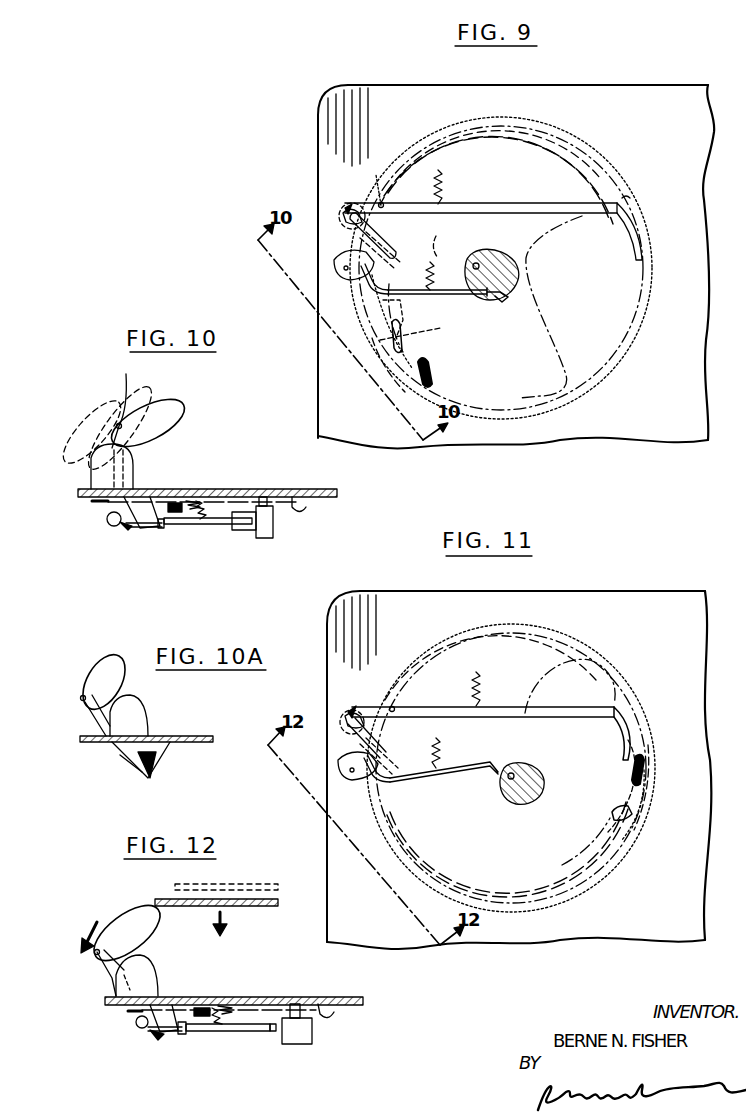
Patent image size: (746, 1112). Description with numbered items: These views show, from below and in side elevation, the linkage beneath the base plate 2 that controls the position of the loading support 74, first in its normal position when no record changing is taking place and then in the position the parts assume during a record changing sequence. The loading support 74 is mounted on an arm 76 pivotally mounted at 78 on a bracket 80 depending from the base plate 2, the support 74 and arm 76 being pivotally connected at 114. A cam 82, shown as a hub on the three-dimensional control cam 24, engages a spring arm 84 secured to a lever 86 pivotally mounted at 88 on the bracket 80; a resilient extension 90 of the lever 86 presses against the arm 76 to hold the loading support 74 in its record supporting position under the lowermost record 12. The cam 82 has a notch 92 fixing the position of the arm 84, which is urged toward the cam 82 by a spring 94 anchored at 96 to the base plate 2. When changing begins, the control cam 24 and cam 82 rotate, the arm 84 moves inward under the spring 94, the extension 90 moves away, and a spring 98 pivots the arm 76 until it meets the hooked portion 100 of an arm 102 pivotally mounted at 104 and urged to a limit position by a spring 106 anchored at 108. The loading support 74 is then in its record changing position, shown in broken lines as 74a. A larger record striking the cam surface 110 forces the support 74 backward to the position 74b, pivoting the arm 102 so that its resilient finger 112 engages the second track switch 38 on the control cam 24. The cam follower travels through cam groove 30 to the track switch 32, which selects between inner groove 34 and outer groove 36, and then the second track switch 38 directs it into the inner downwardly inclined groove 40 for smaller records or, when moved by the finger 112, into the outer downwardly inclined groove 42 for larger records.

In FIG. 9, the base plate 2 is at (668, 96).
In FIG. 10, the base plate 2 is at (292, 489).
In FIG. 10A, the base plate 2 is at (204, 736).
In FIG. 12, the base plate 2 is at (316, 1003).
In FIG. 11, the base plate 2 is at (650, 592).
In FIG. 12, the record 12 is at (238, 893).
In FIG. 9, the three-dimensional control cam 24 is at (620, 347).
In FIG. 11, the three-dimensional control cam 24 is at (548, 640).
In FIG. 9, the cam groove 30 is at (470, 412).
In FIG. 11, the cam groove 30 is at (626, 698).
In FIG. 9, the track switch 32 is at (430, 370).
In FIG. 11, the track switch 32 is at (642, 770).
In FIG. 9, the inner groove 34 is at (402, 362).
In FIG. 11, the inner groove 34 is at (640, 786).
In FIG. 9, the outer groove 36 is at (398, 362).
In FIG. 11, the outer groove 36 is at (648, 800).
In FIG. 9, the second track switch 38 is at (394, 336).
In FIG. 11, the second track switch 38 is at (628, 816).
In FIG. 9, the inner downwardly inclined groove 40 is at (406, 302).
In FIG. 11, the inner downwardly inclined groove 40 is at (598, 828).
In FIG. 9, the outer downwardly inclined groove 42 is at (374, 314).
In FIG. 11, the outer downwardly inclined groove 42 is at (626, 840).
In FIG. 10, the loading support 74 is at (168, 410).
In FIG. 10A, the loading support 74 is at (96, 670).
In FIG. 12, the loading support 74 is at (122, 922).
In FIG. 10, the loading support record changing position 74a is at (140, 404).
In FIG. 10, the loading support cammed-out position 74b is at (92, 408).
In FIG. 9, the arm 76 is at (366, 236).
In FIG. 10, the arm 76 is at (126, 446).
In FIG. 10A, the arm 76 is at (96, 718).
In FIG. 12, the arm 76 is at (112, 972).
In FIG. 11, the arm 76 is at (378, 742).
In FIG. 9, the pivot 78 is at (382, 250).
In FIG. 10, the pivot 78 is at (140, 530).
In FIG. 10A, the pivot 78 is at (158, 776).
In FIG. 12, the pivot 78 is at (162, 1036).
In FIG. 11, the pivot 78 is at (387, 756).
In FIG. 9, the bracket 80 is at (342, 260).
In FIG. 10, the bracket 80 is at (148, 500).
In FIG. 10A, the bracket 80 is at (160, 758).
In FIG. 12, the bracket 80 is at (170, 1005).
In FIG. 11, the bracket 80 is at (342, 762).
In FIG. 9, the cam 82 is at (492, 256).
In FIG. 10, the cam 82 is at (272, 532).
In FIG. 12, the cam 82 is at (304, 1045).
In FIG. 11, the cam 82 is at (538, 764).
In FIG. 9, the spring arm 84 is at (453, 297).
In FIG. 10, the spring arm 84 is at (205, 526).
In FIG. 12, the spring arm 84 is at (230, 1032).
In FIG. 11, the spring arm 84 is at (448, 772).
In FIG. 9, the lever 86 is at (358, 280).
In FIG. 10, the lever 86 is at (158, 530).
In FIG. 12, the lever 86 is at (182, 1036).
In FIG. 11, the lever 86 is at (364, 782).
In FIG. 9, the pivot 88 is at (342, 269).
In FIG. 10, the pivot 88 is at (124, 528).
In FIG. 12, the pivot 88 is at (154, 1040).
In FIG. 11, the pivot 88 is at (348, 771).
In FIG. 9, the extension 90 is at (345, 216).
In FIG. 10, the extension 90 is at (110, 524).
In FIG. 12, the extension 90 is at (140, 1030).
In FIG. 11, the extension 90 is at (346, 730).
In FIG. 9, the notch 92 is at (474, 284).
In FIG. 10, the notch 92 is at (244, 532).
In FIG. 11, the notch 92 is at (546, 772).
In FIG. 9, the spring 94 is at (427, 263).
In FIG. 10, the spring 94 is at (196, 512).
In FIG. 12, the spring 94 is at (212, 1024).
In FIG. 11, the spring 94 is at (442, 750).
In FIG. 9, the anchor 96 is at (507, 307).
In FIG. 10A, the spring 98 is at (136, 766).
In FIG. 9, the hooked portion 100 is at (347, 209).
In FIG. 10, the hooked portion 100 is at (96, 505).
In FIG. 12, the hooked portion 100 is at (126, 1012).
In FIG. 11, the hooked portion 100 is at (350, 710).
In FIG. 9, the arm 102 is at (497, 203).
In FIG. 10, the arm 102 is at (240, 500).
In FIG. 12, the arm 102 is at (244, 1006).
In FIG. 11, the arm 102 is at (490, 707).
In FIG. 9, the pivot 104 is at (380, 200).
In FIG. 10, the pivot 104 is at (182, 497).
In FIG. 12, the pivot 104 is at (204, 1004).
In FIG. 11, the pivot 104 is at (392, 705).
In FIG. 9, the spring 106 is at (446, 190).
In FIG. 10, the spring 106 is at (200, 500).
In FIG. 12, the spring 106 is at (222, 1004).
In FIG. 11, the spring 106 is at (460, 690).
In FIG. 9, the anchor 108 is at (440, 168).
In FIG. 11, the anchor 108 is at (448, 678).
In FIG. 10, the cam surface 110 is at (182, 406).
In FIG. 12, the cam surface 110 is at (152, 908).
In FIG. 9, the finger 112 is at (640, 230).
In FIG. 10, the finger 112 is at (307, 510).
In FIG. 12, the finger 112 is at (336, 1016).
In FIG. 11, the finger 112 is at (628, 735).
In FIG. 10, the pivotal connection 114 is at (109, 406).
In FIG. 10A, the pivotal connection 114 is at (80, 698).
In FIG. 12, the pivotal connection 114 is at (94, 954).